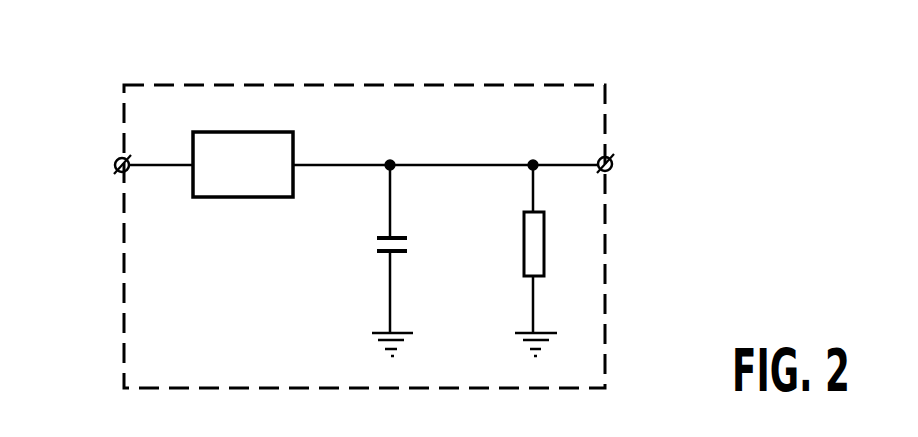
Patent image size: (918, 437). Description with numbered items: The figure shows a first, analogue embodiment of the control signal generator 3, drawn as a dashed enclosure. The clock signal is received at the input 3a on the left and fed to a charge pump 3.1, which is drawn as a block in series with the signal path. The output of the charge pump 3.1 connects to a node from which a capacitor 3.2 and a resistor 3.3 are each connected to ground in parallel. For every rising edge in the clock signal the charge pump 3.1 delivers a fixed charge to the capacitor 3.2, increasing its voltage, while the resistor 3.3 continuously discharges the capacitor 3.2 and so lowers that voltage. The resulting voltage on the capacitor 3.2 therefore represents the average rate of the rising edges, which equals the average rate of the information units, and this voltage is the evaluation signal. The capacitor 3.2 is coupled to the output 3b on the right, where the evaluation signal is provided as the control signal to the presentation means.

The control signal generator 3 is at (363, 84).
The input 3a is at (113, 164).
The output 3b is at (613, 163).
The charge pump 3.1 is at (235, 198).
The capacitor 3.2 is at (377, 242).
The resistor 3.3 is at (524, 240).